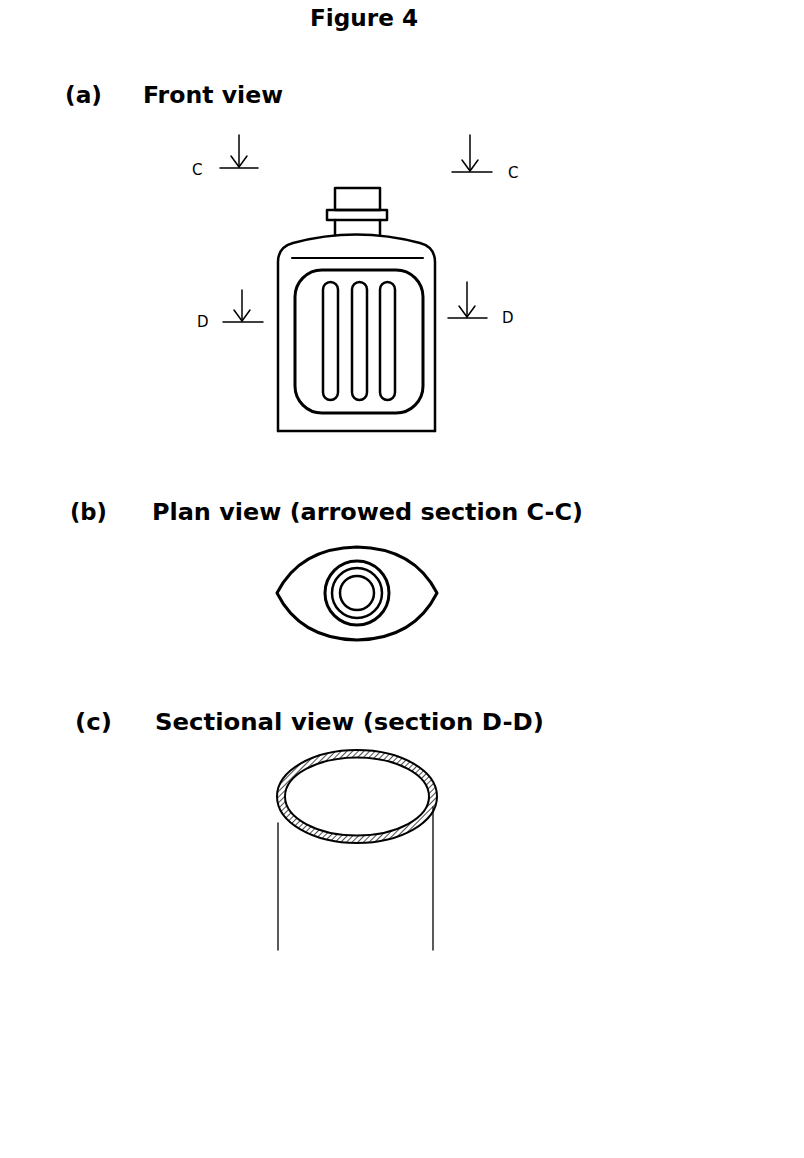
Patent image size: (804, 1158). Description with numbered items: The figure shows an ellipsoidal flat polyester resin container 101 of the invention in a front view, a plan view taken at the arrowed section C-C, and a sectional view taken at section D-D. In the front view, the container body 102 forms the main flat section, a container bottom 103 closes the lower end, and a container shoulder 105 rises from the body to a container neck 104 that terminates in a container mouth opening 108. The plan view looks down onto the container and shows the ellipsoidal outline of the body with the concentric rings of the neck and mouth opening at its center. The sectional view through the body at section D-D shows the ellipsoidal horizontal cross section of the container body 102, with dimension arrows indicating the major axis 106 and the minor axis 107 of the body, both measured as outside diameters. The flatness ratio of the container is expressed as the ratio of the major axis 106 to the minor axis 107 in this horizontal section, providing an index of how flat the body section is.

The flat polyester resin container 101 is at (446, 235).
The container body 102 is at (505, 258).
The container bottom 103 is at (383, 431).
The container neck 104 is at (381, 188).
The container shoulder 105 is at (304, 233).
The major axis of the container body 106 is at (278, 939).
The minor axis of the container body 107 is at (390, 843).
The container mouth opening 108 is at (385, 225).